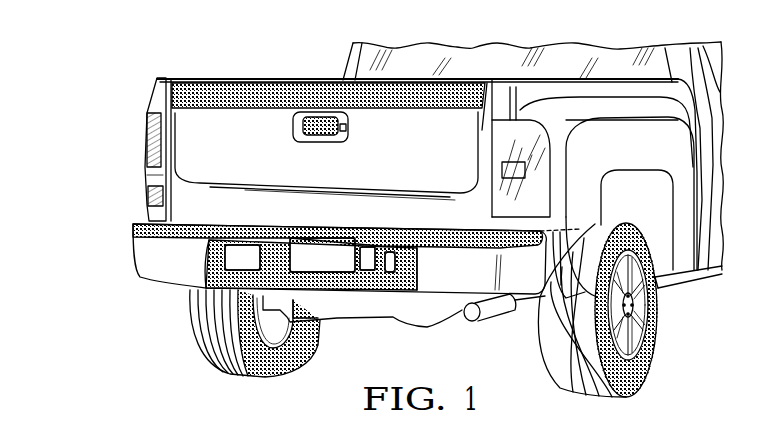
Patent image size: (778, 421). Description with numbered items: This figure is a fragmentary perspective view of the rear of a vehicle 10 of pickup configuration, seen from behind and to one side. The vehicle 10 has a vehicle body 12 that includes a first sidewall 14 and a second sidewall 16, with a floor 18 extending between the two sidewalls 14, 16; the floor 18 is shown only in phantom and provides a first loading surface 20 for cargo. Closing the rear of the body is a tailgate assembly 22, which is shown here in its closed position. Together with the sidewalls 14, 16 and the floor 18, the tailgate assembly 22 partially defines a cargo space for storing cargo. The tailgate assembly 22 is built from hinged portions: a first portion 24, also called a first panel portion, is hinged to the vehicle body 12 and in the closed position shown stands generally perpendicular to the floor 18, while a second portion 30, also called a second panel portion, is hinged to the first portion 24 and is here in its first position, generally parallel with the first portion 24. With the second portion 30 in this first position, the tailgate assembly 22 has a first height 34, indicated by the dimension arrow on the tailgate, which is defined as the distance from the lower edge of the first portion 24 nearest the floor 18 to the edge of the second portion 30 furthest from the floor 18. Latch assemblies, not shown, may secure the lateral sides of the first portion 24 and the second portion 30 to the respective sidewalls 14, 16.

The vehicle 10 is at (100, 100).
The vehicle body 12 is at (603, 90).
The first sidewall 14 is at (157, 90).
The second sidewall 16 is at (503, 93).
The floor 18 is at (562, 232).
The first loading surface 20 is at (554, 222).
The tailgate assembly 22 is at (200, 160).
The first portion 24 is at (217, 205).
The second portion 30 is at (200, 125).
The first height 34 is at (420, 86).